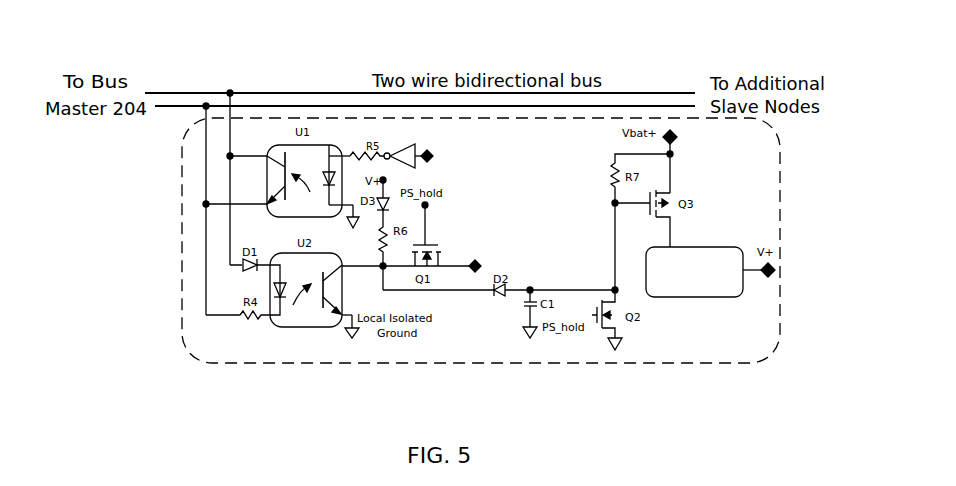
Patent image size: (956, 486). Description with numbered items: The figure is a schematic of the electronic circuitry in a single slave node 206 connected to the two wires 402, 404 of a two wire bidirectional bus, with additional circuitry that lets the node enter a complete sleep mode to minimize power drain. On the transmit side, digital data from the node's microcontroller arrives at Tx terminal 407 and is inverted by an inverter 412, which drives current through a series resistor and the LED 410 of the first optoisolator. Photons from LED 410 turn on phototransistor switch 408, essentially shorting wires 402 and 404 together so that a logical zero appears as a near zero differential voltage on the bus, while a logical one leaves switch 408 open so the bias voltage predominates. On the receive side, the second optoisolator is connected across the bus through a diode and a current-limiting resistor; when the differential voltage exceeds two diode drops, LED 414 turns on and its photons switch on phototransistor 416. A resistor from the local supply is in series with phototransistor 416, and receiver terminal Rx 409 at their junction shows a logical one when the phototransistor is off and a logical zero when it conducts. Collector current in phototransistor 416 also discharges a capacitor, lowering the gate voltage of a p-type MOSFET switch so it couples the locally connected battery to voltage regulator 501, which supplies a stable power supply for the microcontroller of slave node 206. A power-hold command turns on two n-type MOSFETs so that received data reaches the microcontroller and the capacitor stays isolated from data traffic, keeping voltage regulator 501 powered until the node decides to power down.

The first wire of the bidirectional bus 402 is at (187, 92).
The second wire of the bidirectional bus 404 is at (175, 107).
The slave node 206 is at (243, 363).
The phototransistor switch 408 is at (286, 150).
The LED 410 is at (321, 152).
The inverter 412 is at (406, 143).
The Tx terminal 407 is at (437, 167).
The receiver terminal Rx 409 is at (488, 247).
The LED 414 is at (287, 310).
The phototransistor 416 is at (314, 316).
The voltage regulator 501 is at (707, 247).